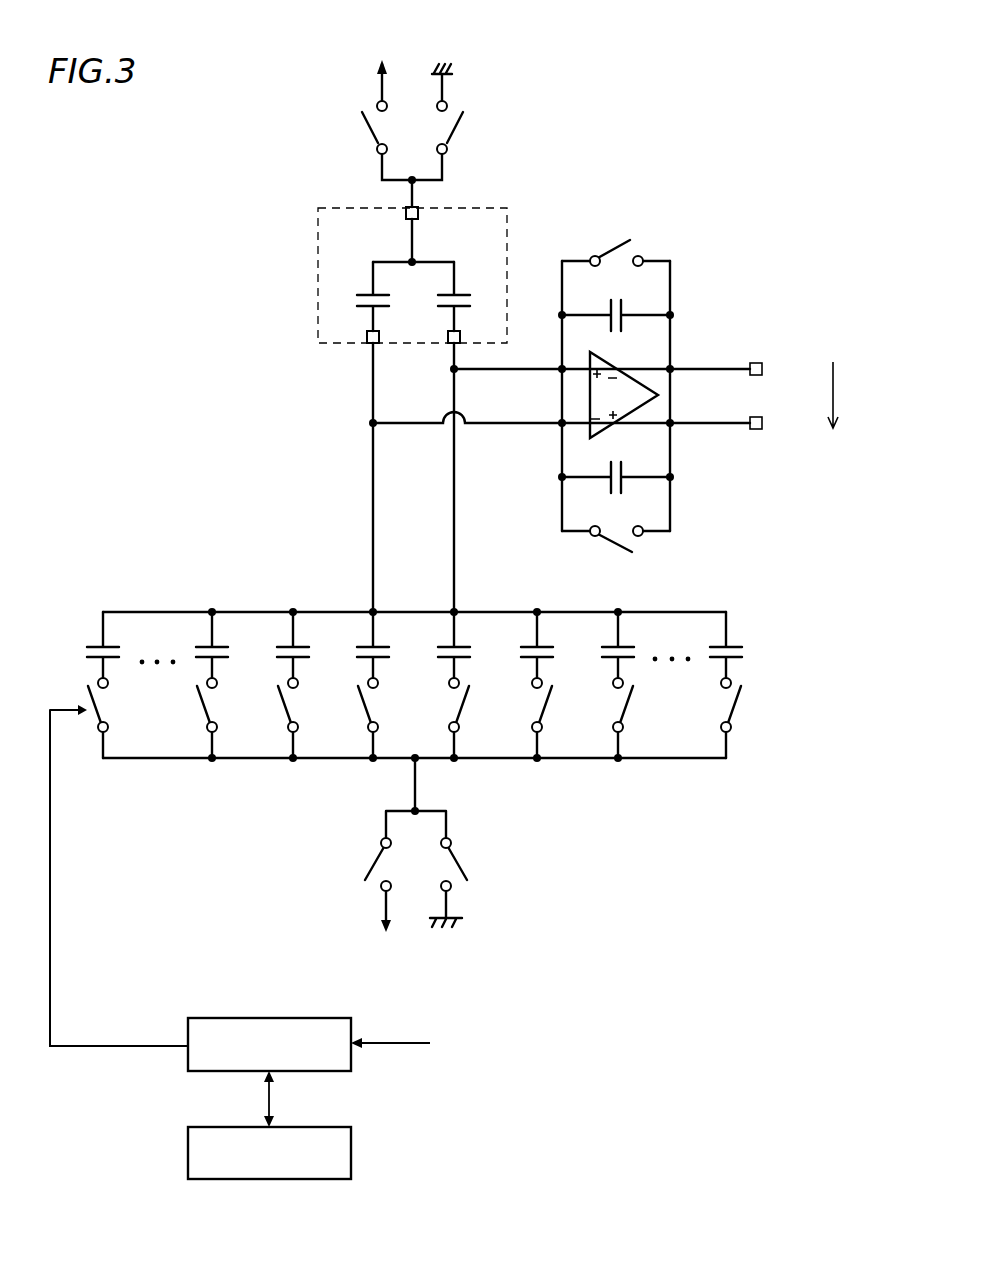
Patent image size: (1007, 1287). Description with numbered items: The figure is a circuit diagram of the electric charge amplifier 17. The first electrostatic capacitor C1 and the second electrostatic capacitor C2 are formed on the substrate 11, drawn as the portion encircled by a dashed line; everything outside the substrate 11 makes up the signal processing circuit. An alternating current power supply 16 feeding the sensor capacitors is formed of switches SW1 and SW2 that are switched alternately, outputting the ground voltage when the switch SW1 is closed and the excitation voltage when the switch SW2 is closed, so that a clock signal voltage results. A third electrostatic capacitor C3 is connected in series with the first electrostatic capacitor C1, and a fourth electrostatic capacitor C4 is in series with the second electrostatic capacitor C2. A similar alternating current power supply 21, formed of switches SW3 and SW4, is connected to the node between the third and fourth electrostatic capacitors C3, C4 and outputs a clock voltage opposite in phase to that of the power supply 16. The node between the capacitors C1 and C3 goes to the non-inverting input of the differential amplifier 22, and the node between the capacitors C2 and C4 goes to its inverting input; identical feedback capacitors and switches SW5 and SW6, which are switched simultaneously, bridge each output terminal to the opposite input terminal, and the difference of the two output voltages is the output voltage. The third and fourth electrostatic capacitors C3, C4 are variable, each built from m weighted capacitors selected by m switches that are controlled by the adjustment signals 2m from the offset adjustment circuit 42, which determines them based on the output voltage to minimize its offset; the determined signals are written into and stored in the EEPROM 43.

The alternating current power supply 16 is at (334, 95).
The substrate 11 is at (323, 262).
The differential amplifier 22 is at (670, 395).
The electric charge amplifier 17 is at (576, 843).
The alternating current power supply 21 is at (339, 823).
The adjustment signals 2m is at (41, 932).
The offset adjustment circuit 42 is at (188, 1058).
The EEPROM 43 is at (188, 1167).
The third electrostatic capacitor C3 is at (691, 600).
The fourth electrostatic capacitor C4 is at (181, 600).
The first electrostatic capacitor C1 is at (470, 437).
The second electrostatic capacitor C2 is at (358, 437).
The switch SW1 is at (492, 130).
The switch SW2 is at (337, 130).
The switch SW3 is at (495, 861).
The switch SW4 is at (339, 861).
The switch SW5 is at (619, 223).
The switch SW6 is at (619, 573).